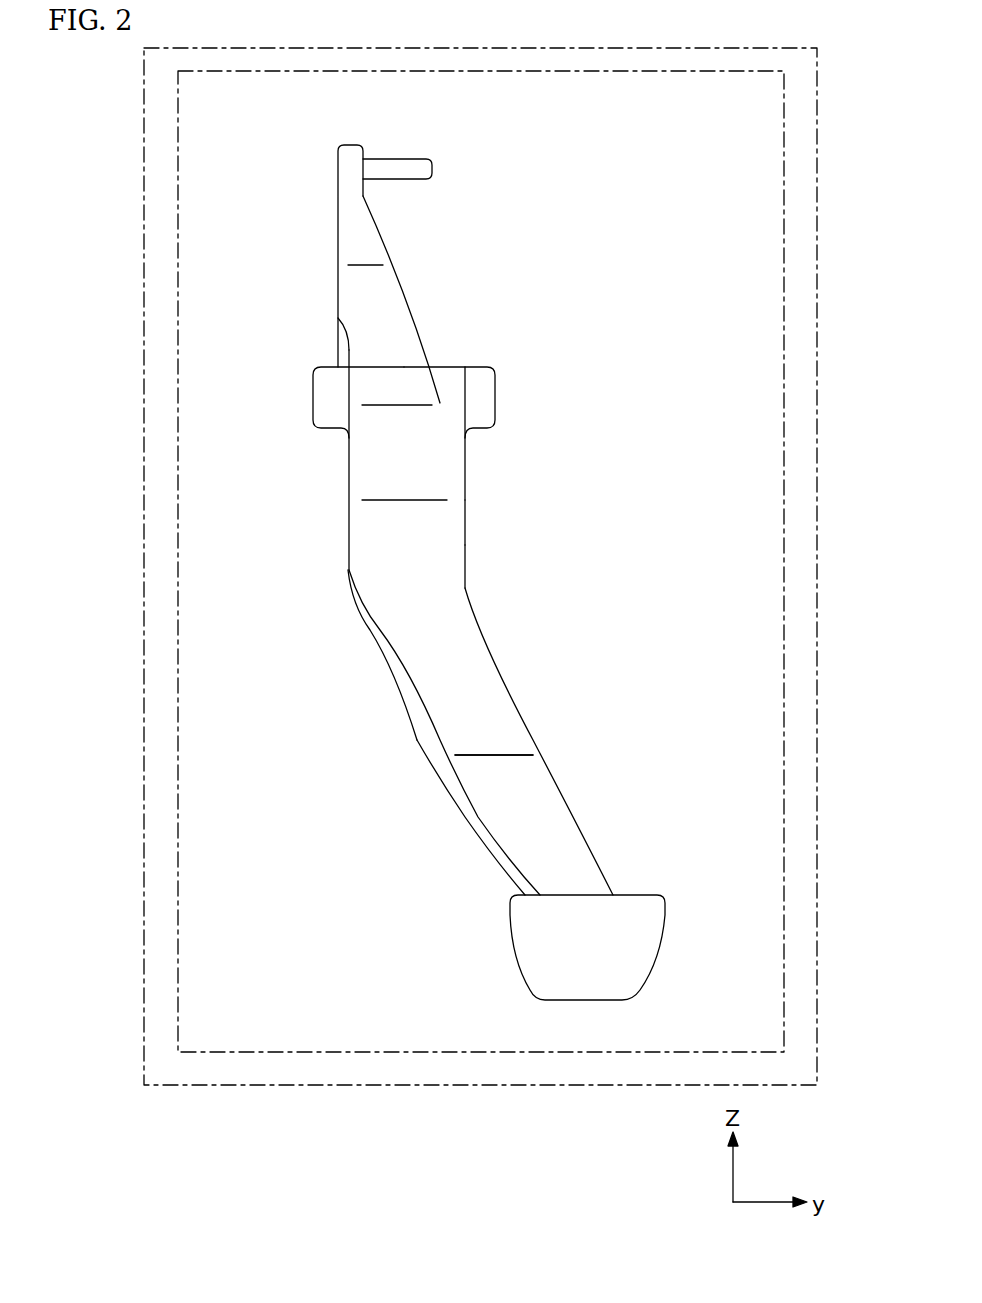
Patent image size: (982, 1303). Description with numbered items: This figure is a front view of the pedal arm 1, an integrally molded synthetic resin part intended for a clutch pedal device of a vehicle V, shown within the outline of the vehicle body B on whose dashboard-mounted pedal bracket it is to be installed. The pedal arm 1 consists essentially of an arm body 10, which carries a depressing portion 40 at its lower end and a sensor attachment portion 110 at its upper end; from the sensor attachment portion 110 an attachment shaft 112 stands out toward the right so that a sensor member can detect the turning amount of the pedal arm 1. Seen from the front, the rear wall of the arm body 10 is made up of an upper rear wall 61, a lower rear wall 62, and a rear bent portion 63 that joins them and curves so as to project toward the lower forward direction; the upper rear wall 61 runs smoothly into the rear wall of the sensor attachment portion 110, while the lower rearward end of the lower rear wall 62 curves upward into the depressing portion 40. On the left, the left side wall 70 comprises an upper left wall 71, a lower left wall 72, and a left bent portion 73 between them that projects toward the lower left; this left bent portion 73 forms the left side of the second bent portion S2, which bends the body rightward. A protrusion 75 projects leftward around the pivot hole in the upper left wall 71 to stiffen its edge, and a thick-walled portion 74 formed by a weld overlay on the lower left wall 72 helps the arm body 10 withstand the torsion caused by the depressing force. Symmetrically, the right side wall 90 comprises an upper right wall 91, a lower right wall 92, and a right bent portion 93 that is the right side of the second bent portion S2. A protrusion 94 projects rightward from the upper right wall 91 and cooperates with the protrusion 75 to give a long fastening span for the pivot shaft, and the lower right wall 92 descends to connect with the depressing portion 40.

The pedal arm 1 is at (592, 315).
The arm body 10 is at (548, 433).
The depressing portion 40 is at (677, 918).
The upper rear wall 61 is at (433, 465).
The lower rear wall 62 is at (552, 805).
The rear bent portion 63 is at (495, 743).
The left side wall 70 is at (388, 732).
The upper left wall 71 is at (318, 517).
The lower left wall 72 is at (408, 762).
The left bent portion 73 is at (322, 625).
The thick-walled portion 74 is at (478, 817).
The protrusion 75 is at (325, 400).
The right side wall 90 is at (532, 623).
The upper right wall 91 is at (480, 510).
The lower right wall 92 is at (545, 712).
The right bent portion 93 is at (487, 587).
The protrusion 94 is at (482, 395).
The sensor attachment portion 110 is at (417, 192).
The attachment shaft 112 is at (404, 165).
The second bent portion S2 is at (507, 552).
The vehicle V is at (832, 168).
The vehicle body B is at (793, 317).